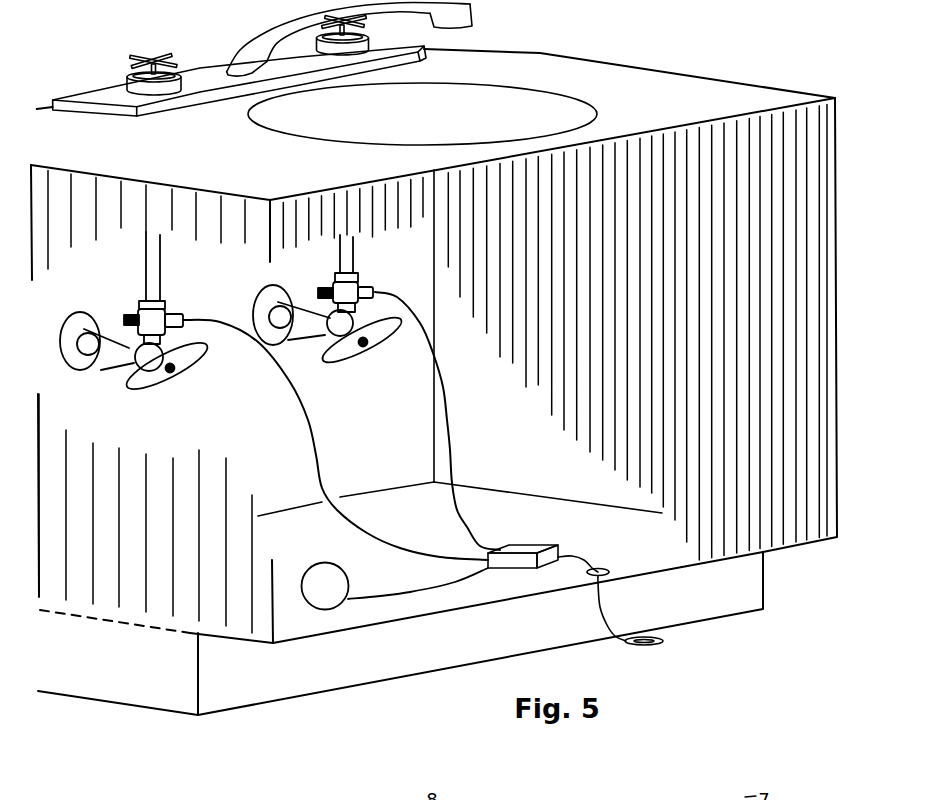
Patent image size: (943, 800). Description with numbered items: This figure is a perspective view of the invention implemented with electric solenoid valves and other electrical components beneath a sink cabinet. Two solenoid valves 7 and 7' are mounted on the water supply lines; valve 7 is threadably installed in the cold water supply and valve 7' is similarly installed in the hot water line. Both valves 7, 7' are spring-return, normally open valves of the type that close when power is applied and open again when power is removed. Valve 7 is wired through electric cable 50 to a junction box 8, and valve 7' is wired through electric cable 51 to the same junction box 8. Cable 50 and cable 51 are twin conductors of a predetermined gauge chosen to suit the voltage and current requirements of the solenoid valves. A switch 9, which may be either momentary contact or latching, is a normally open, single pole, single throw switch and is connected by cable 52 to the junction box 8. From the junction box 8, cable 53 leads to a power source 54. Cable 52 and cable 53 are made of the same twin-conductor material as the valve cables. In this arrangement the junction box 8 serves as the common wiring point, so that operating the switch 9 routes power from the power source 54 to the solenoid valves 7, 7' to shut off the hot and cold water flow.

The solenoid valve 7 is at (337, 302).
The solenoid valve 7' is at (146, 314).
The junction box 8 is at (521, 548).
The switch 9 is at (682, 645).
The electric cable 50 is at (445, 407).
The electric cable 51 is at (312, 432).
The cable 52 is at (582, 552).
The cable 53 is at (412, 592).
The power source 54 is at (328, 563).